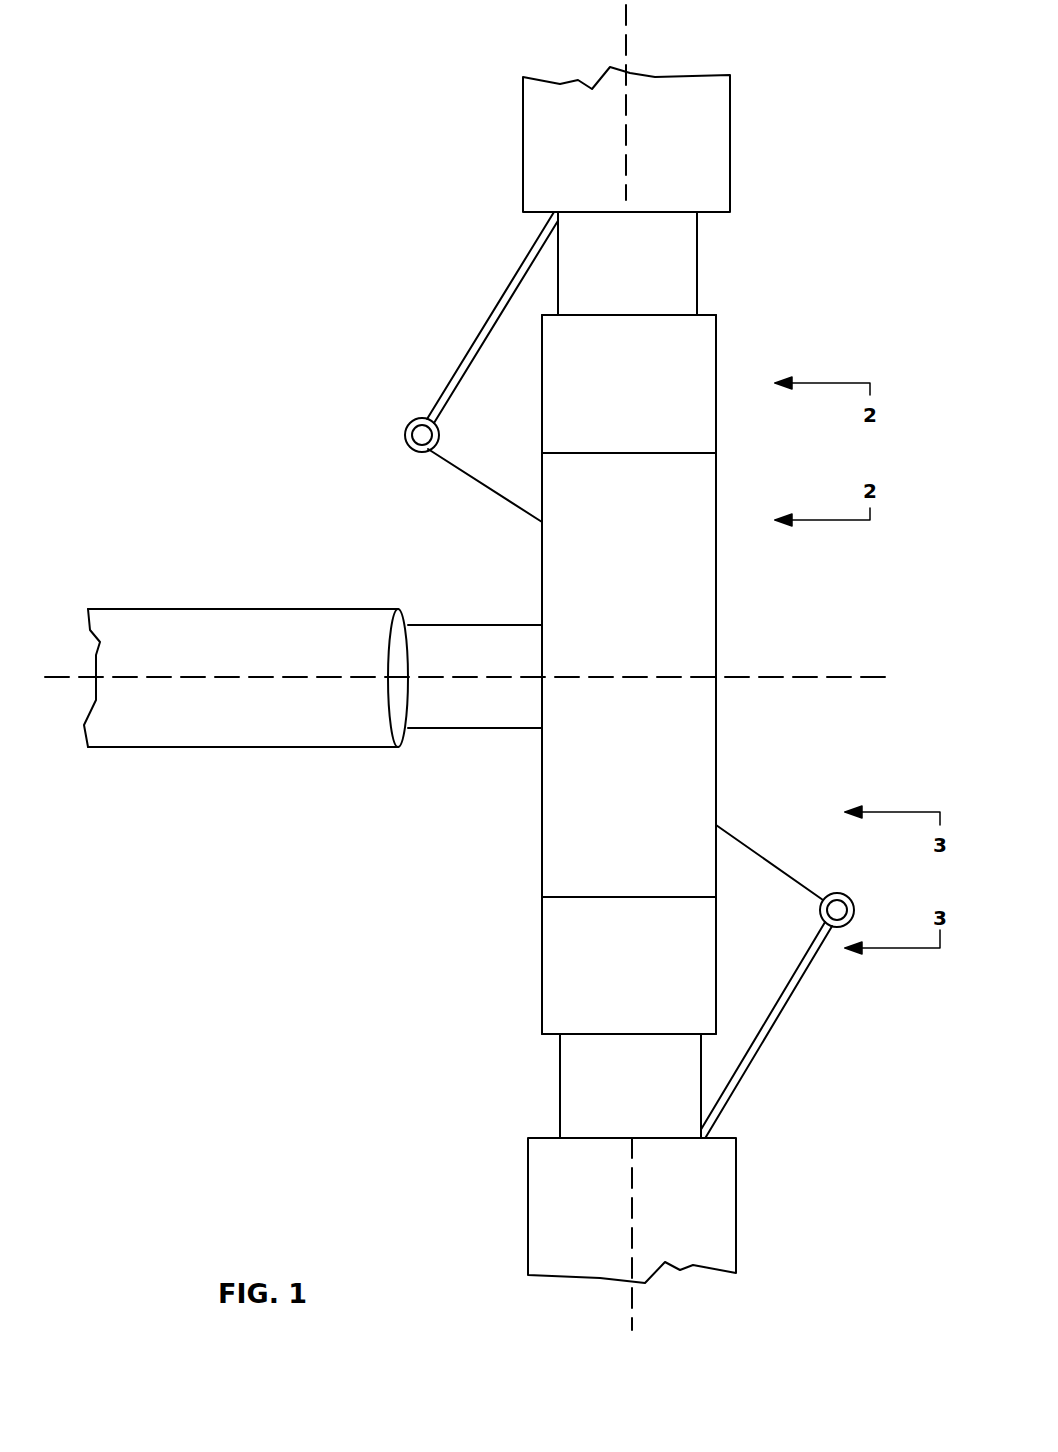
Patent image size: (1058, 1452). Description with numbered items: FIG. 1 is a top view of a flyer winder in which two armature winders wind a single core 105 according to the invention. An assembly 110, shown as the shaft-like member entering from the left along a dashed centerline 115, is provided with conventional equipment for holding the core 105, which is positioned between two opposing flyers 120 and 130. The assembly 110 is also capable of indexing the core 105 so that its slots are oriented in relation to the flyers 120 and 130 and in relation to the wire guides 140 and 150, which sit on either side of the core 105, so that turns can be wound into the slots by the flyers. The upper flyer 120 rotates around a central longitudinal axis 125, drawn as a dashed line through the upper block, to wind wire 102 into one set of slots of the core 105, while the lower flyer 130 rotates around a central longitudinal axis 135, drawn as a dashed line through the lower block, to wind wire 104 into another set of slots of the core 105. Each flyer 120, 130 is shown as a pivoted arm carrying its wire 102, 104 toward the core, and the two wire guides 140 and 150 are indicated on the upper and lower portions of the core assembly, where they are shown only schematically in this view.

The wire 102 is at (462, 479).
The wire 104 is at (760, 845).
The core 105 is at (716, 520).
The assembly 110 is at (245, 608).
The axis of rotation 115 is at (50, 677).
The flyer 120 is at (473, 348).
The central longitudinal axis 125 is at (627, 40).
The flyer 130 is at (795, 990).
The central longitudinal axis 135 is at (633, 1328).
The wire guide 140 is at (716, 380).
The wire guide 150 is at (542, 975).